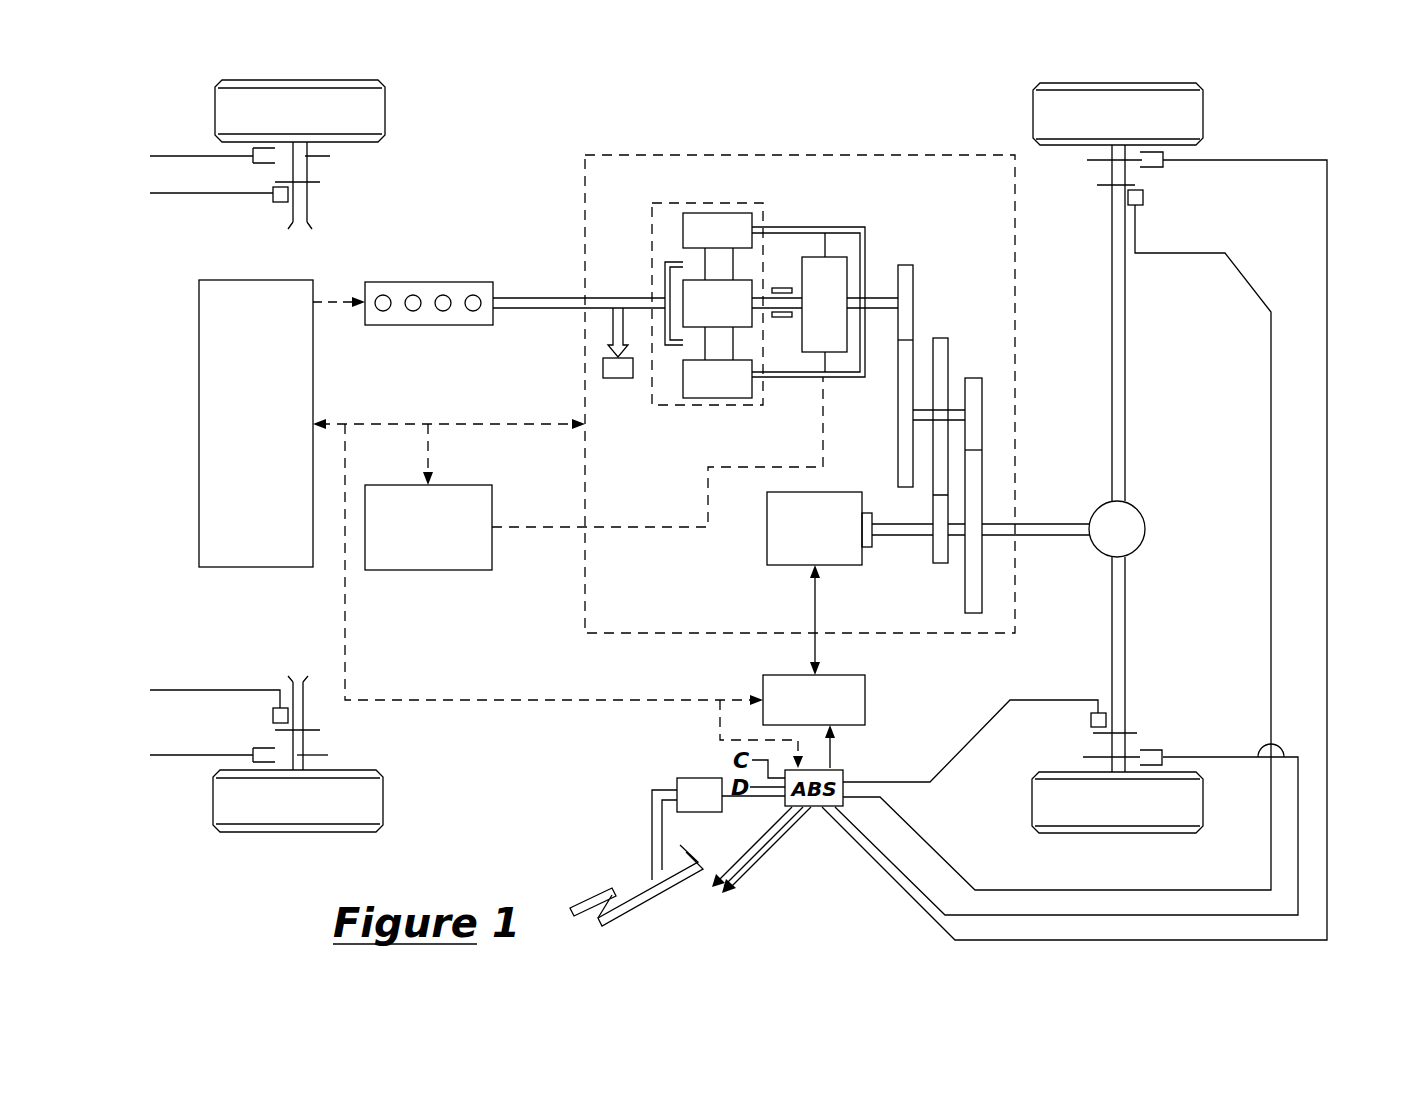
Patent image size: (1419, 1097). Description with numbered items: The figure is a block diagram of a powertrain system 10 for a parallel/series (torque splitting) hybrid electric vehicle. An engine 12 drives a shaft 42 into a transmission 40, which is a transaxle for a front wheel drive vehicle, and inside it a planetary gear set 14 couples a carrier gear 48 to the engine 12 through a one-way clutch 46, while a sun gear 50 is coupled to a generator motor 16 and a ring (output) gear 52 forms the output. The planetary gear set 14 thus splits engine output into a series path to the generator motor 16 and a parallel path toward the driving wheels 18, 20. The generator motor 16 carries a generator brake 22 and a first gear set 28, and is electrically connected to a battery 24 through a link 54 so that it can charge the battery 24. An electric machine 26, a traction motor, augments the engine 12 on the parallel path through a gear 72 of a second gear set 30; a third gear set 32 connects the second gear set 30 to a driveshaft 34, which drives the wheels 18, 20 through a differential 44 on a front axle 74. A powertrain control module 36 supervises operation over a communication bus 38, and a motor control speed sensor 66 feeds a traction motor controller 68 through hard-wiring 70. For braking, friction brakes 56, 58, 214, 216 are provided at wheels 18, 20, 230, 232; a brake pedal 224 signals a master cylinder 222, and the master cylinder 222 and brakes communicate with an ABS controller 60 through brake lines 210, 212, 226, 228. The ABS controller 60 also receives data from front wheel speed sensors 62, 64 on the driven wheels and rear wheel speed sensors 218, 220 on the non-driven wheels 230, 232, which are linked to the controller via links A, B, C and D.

The powertrain system 10 is at (262, 74).
The engine 12 is at (482, 282).
The planetary gear set 14 is at (668, 203).
The generator motor 16 is at (825, 257).
The driving wheel 18 is at (1203, 110).
The driving wheel 20 is at (1118, 833).
The generator brake 22 is at (781, 288).
The battery 24 is at (425, 570).
The electric machine (traction motor) 26 is at (767, 548).
The first gear set 28 is at (909, 258).
The second gear set 30 is at (941, 330).
The third gear set 32 is at (973, 370).
The driveshaft 34 is at (1050, 524).
The powertrain control module 36 is at (199, 425).
The communication bus 38 is at (462, 424).
The transmission 40 is at (599, 135).
The shaft 42 is at (548, 298).
The differential 44 is at (1145, 526).
The one-way clutch 46 is at (618, 378).
The carrier gear 48 is at (665, 282).
The sun gear 50 is at (723, 298).
The ring (output) gear 52 is at (700, 226).
The link 54 is at (533, 527).
The friction brake 56 is at (1087, 160).
The friction brake 58 is at (1143, 750).
The ABS controller 60 is at (815, 865).
The front wheel speed sensor 62 is at (1143, 197).
The front wheel speed sensor 64 is at (1091, 720).
The motor control speed sensor 66 is at (872, 548).
The traction motor controller 68 is at (865, 700).
The hard-wiring 70 is at (818, 605).
The gear 72 is at (940, 563).
The front axle 74 is at (1148, 622).
The brake line 210 is at (1173, 915).
The brake line 212 is at (1328, 870).
The friction brake 214 is at (330, 156).
The friction brake 216 is at (322, 755).
The rear wheel speed sensor 218 is at (281, 202).
The rear wheel speed sensor 220 is at (273, 715).
The master cylinder 222 is at (700, 778).
The brake pedal 224 is at (628, 912).
The brake line 226 is at (185, 156).
The brake line 228 is at (170, 755).
The wheel 230 is at (385, 108).
The wheel 232 is at (383, 800).